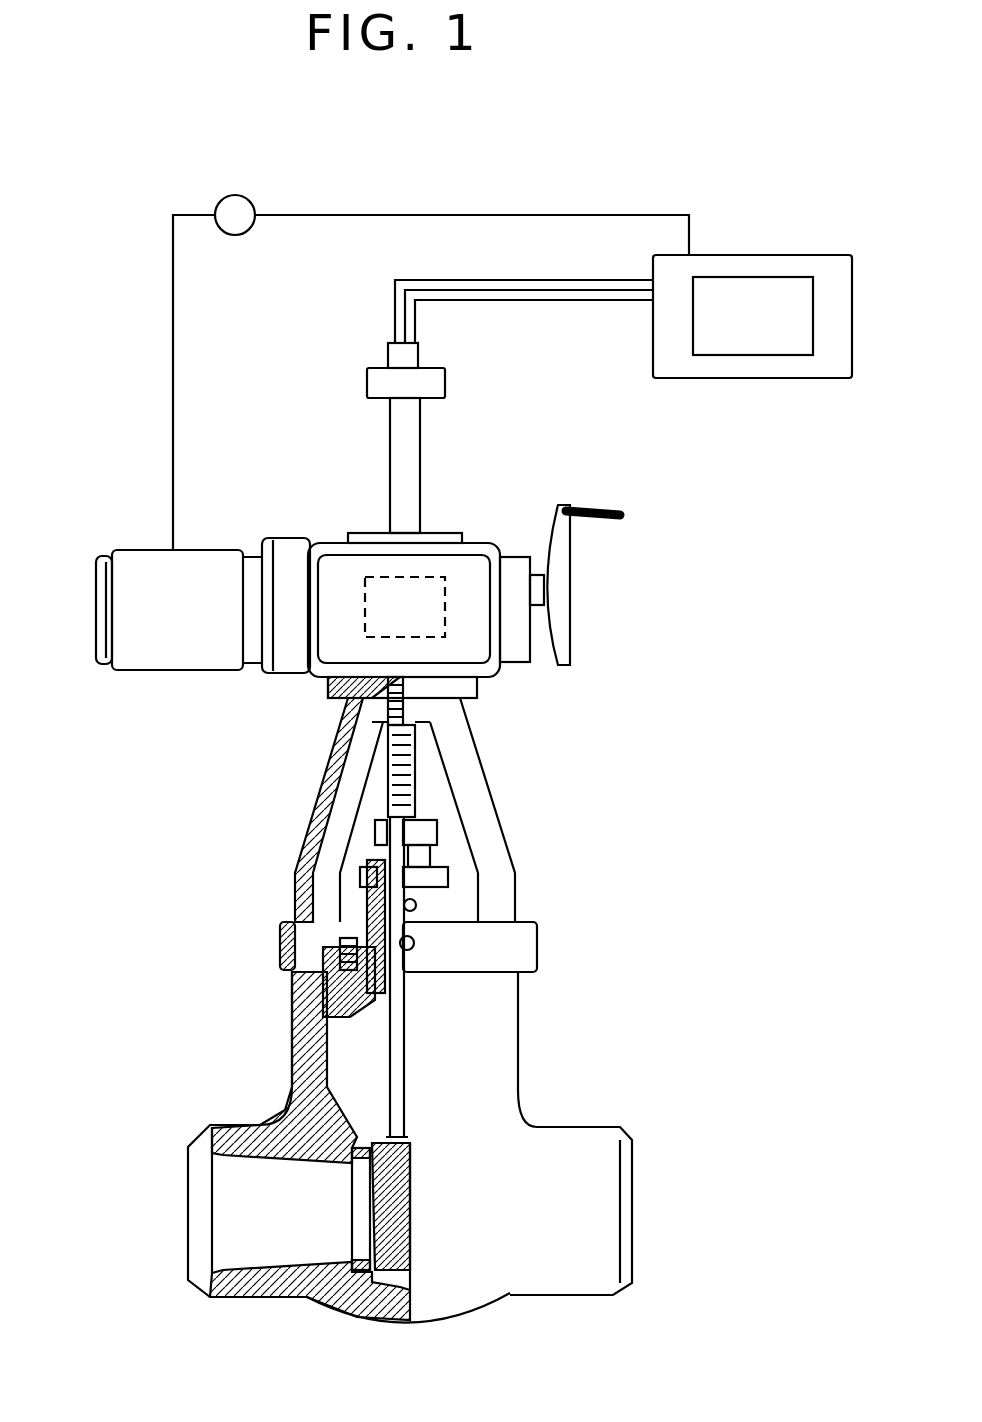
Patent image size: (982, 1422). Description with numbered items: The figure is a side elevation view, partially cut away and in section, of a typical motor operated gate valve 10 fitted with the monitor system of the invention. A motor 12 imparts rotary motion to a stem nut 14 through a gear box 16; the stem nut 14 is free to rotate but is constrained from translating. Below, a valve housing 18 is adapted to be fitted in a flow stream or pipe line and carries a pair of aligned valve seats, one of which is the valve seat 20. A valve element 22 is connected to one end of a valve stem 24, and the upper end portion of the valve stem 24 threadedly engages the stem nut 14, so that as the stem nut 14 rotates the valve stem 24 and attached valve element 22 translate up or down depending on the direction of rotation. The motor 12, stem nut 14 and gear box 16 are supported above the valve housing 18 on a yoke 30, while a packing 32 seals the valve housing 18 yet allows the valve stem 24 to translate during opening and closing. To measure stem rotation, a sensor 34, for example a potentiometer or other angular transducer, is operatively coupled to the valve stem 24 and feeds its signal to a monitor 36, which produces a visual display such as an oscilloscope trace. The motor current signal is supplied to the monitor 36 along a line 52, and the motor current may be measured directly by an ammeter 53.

The motor operated gate valve 10 is at (148, 520).
The motor 12 is at (213, 550).
The stem nut 14 is at (447, 580).
The gear box 16 is at (287, 678).
The valve housing 18 is at (520, 1058).
The valve seat 20 is at (372, 1260).
The valve element 22 is at (370, 1203).
The valve stem 24 is at (393, 789).
The yoke 30 is at (483, 780).
The packing 32 is at (453, 893).
The sensor 34 is at (380, 478).
The monitor 36 is at (762, 255).
The line 52 is at (173, 340).
The ammeter 53 is at (240, 195).